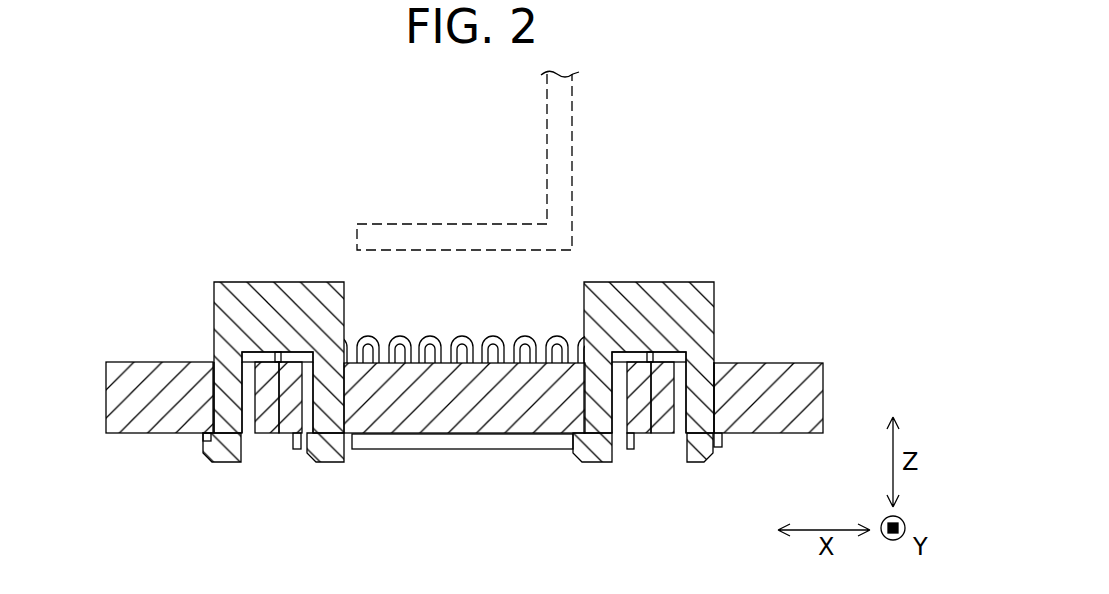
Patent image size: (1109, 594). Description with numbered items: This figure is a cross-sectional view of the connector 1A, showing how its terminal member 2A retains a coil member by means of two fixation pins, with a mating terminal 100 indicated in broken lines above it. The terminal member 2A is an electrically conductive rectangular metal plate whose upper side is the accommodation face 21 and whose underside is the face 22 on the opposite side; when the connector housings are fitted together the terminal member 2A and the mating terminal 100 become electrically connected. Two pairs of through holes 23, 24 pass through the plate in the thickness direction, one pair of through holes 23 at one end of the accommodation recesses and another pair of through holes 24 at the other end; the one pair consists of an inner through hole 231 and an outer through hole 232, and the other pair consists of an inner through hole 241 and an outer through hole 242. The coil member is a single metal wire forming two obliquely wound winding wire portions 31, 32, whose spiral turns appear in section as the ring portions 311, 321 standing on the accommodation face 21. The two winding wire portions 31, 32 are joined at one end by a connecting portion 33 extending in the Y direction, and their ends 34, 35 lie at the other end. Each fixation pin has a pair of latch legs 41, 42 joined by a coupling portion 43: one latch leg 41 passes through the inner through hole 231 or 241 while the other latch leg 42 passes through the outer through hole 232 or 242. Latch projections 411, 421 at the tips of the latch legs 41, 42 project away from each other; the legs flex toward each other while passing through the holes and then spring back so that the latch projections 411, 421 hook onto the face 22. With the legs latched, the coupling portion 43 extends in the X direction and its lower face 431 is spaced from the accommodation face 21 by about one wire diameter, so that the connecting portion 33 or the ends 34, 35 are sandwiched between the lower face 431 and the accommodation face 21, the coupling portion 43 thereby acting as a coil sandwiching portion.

The mating terminal 100 is at (574, 86).
The connector 1A is at (856, 306).
The terminal member 2A is at (815, 382).
The accommodation face 21 is at (147, 362).
The face on an opposite side 22 is at (457, 436).
The one pair of through holes 23 is at (271, 465).
The inner through hole 231 is at (302, 414).
The outer through hole 232 is at (256, 415).
The another pair of through holes 24 is at (655, 465).
The inner through hole 241 is at (627, 437).
The outer through hole 242 is at (680, 440).
The winding wire portion 31 is at (462, 310).
The winding wire portion 32 is at (504, 280).
The ring portions 311 is at (557, 336).
The ring portions 321 is at (462, 310).
The connecting portion 33 is at (277, 352).
The end 34 is at (677, 305).
The end 35 is at (650, 352).
The latch leg 41 is at (346, 395).
The latch projection 411 is at (302, 452).
The latch leg 42 is at (220, 410).
The latch projection 421 is at (209, 436).
The coupling portion 43 is at (227, 297).
The lower face 431 is at (233, 392).